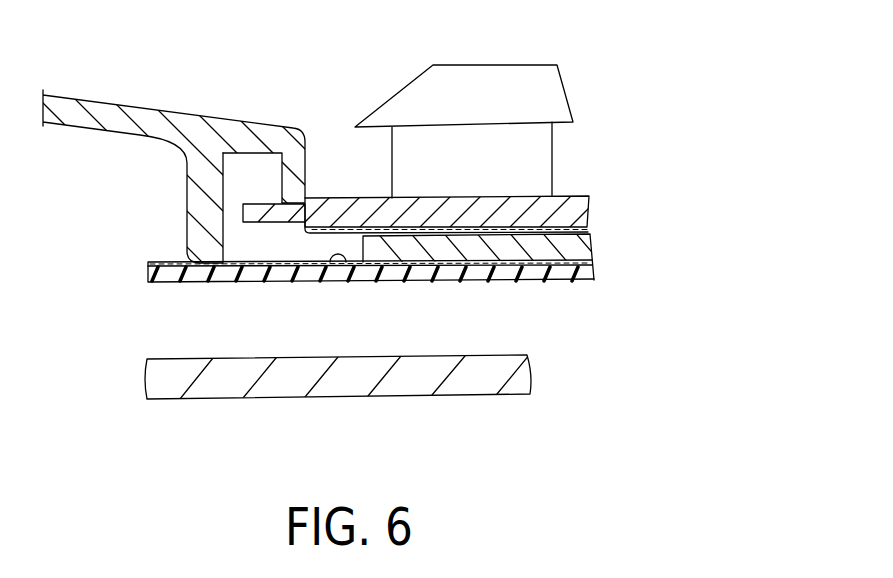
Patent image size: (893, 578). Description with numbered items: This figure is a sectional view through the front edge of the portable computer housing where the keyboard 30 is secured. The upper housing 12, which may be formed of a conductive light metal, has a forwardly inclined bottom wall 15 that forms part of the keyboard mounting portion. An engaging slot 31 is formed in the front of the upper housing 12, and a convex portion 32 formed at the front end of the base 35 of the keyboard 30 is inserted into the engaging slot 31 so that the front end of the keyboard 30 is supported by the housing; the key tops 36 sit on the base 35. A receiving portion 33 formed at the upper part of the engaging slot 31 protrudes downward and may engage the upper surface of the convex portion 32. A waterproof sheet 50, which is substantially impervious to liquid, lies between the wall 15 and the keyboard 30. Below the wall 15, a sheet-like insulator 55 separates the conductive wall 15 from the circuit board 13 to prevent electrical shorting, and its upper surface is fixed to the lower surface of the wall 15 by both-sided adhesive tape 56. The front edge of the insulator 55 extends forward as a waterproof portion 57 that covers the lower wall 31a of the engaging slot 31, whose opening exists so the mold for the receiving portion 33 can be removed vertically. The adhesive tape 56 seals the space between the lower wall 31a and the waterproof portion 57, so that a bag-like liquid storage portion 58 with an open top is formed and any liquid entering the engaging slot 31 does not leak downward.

The upper housing 12 is at (150, 111).
The circuit board 13 is at (378, 397).
The bottom wall 15 is at (560, 248).
The keyboard 30 is at (598, 173).
The engaging slot 31 is at (282, 199).
The lower wall 31a is at (197, 260).
The convex portion 32 is at (261, 207).
The receiving portion 33 is at (325, 203).
The base 35 is at (587, 207).
The key top 36 is at (563, 90).
The waterproof sheet 50 is at (507, 237).
The insulator 55 is at (537, 278).
The both-sided adhesive tape 56 is at (347, 266).
The waterproof portion 57 is at (290, 283).
The liquid storage portion 58 is at (277, 246).